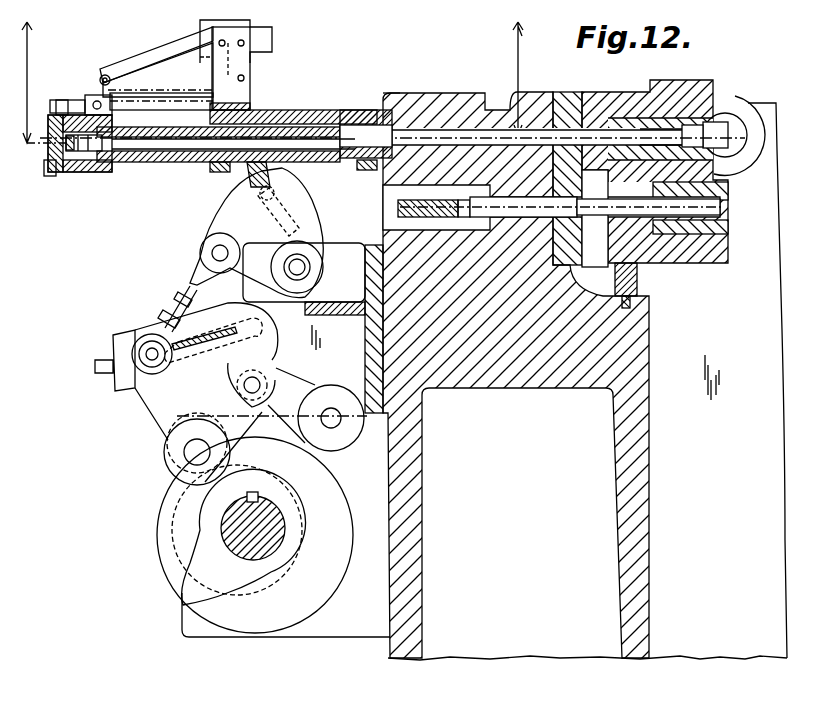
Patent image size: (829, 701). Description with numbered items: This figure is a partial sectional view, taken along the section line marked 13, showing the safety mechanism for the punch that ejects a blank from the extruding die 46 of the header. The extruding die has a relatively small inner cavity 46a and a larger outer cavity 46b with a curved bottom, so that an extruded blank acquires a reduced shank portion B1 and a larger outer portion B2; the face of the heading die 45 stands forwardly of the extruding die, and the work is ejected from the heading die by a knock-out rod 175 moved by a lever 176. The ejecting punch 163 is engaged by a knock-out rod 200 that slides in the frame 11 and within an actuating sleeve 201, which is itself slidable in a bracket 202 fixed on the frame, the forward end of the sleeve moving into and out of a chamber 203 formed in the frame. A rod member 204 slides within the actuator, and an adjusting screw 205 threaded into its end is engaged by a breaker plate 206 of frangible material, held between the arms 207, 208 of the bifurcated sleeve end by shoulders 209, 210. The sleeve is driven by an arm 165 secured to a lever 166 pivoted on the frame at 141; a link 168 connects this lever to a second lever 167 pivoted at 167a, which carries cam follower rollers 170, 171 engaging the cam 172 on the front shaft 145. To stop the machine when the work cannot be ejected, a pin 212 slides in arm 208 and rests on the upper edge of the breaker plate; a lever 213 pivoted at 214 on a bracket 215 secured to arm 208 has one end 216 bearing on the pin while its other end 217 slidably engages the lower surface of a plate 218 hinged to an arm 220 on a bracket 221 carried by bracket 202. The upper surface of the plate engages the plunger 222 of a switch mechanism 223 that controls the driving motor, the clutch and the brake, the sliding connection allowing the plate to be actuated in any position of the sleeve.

The frame 11 is at (507, 364).
The section line 13 is at (275, 82).
The heading die 45 is at (712, 225).
The extruding die 46 is at (663, 118).
The inner opening or cavity 46a is at (715, 122).
The outer cavity 46b is at (703, 130).
The shank portion B1 is at (688, 125).
The outer portion B2 is at (715, 150).
The pin or shaft 141 is at (300, 262).
The front shaft 145 is at (263, 555).
The ejecting punch 163 is at (564, 125).
The arm 165 is at (272, 170).
The lever 166 is at (228, 218).
The second lever 167 is at (160, 405).
The pivot 167a is at (260, 380).
The link 168 is at (182, 296).
The cam follower roller 170 is at (165, 460).
The cam follower roller 171 is at (345, 435).
The cam 172 is at (200, 597).
The knock-out rod 175 is at (508, 215).
The lever 176 is at (398, 208).
The knock-out rod 200 is at (432, 128).
The actuating sleeve 201 is at (350, 130).
The bracket 202 is at (338, 110).
The chamber 203 is at (410, 125).
The rod member 204 is at (138, 162).
The adjusting screw 205 is at (76, 151).
The breaker plate 206 is at (45, 170).
The arm 207 is at (70, 152).
The arm 208 is at (97, 101).
The shoulder 209 is at (50, 172).
The shoulder 210 is at (50, 120).
The pin 212 is at (62, 100).
The lever 213 is at (108, 76).
The pivot 214 is at (106, 78).
The bracket 215 is at (112, 114).
The end of lever 216 is at (62, 105).
The other end of lever 217 is at (165, 95).
The plate 218 is at (180, 40).
The arm 220 is at (180, 80).
The bracket 221 is at (250, 66).
The plunger 222 is at (212, 110).
The switch mechanism 223 is at (265, 38).